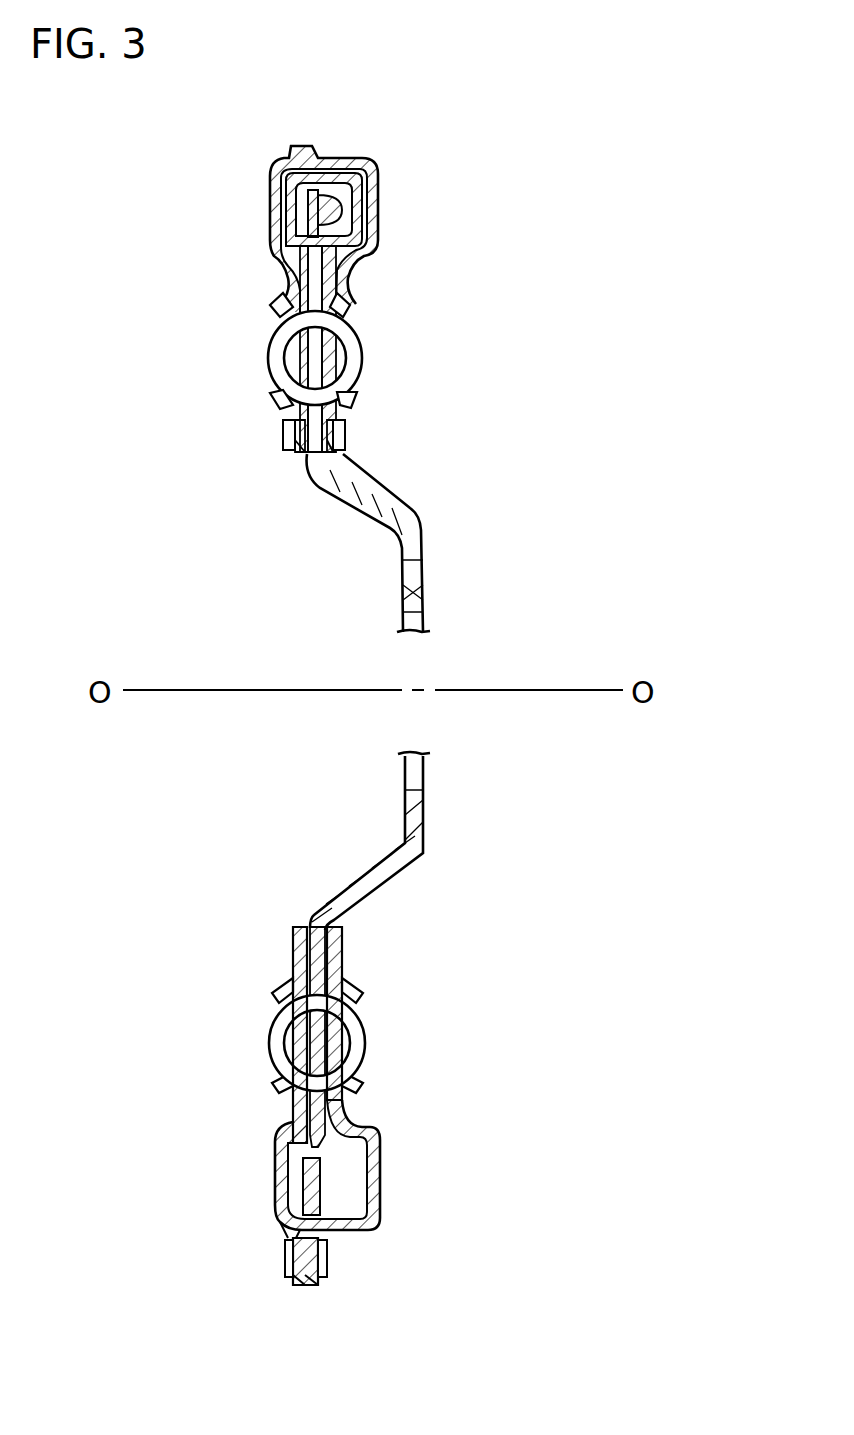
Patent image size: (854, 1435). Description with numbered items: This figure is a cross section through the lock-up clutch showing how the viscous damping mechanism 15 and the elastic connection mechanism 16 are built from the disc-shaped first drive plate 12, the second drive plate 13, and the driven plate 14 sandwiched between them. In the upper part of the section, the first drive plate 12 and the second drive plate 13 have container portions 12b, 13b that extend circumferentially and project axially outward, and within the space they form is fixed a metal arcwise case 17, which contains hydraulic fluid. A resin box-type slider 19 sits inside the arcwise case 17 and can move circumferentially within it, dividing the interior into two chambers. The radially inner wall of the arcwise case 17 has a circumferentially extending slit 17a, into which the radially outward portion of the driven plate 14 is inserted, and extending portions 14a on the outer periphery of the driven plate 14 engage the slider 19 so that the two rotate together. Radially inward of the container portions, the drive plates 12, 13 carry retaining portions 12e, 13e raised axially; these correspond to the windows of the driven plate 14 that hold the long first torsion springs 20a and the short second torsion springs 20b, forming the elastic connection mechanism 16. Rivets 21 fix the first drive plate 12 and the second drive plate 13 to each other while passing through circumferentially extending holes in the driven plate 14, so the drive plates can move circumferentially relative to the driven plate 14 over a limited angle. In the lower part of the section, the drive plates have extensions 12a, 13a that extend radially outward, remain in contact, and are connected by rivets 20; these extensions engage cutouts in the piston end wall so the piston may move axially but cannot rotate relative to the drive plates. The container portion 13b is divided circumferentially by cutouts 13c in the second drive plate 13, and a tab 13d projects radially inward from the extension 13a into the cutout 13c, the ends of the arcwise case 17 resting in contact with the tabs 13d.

The first drive plate 12 is at (270, 266).
The extension 12a is at (293, 1283).
The container portion 12b is at (279, 200).
The retaining portion 12e is at (276, 310).
The second drive plate 13 is at (363, 276).
The extension 13a is at (317, 1286).
The container portion 13b is at (372, 203).
The cutout 13c is at (375, 1168).
The tab 13d is at (312, 1178).
The retaining portion 13e is at (350, 306).
The driven plate 14 is at (420, 532).
The extending portion 14a is at (312, 220).
The viscous damping mechanism 15 is at (246, 154).
The elastic connection mechanism 16 is at (253, 413).
The arcwise case 17 is at (376, 170).
The slit 17a is at (378, 246).
The slider 19 is at (333, 190).
The rivet 20 is at (328, 1262).
The first torsion spring 20a is at (365, 1035).
The second torsion spring 20b is at (352, 358).
The rivet 21 is at (345, 433).